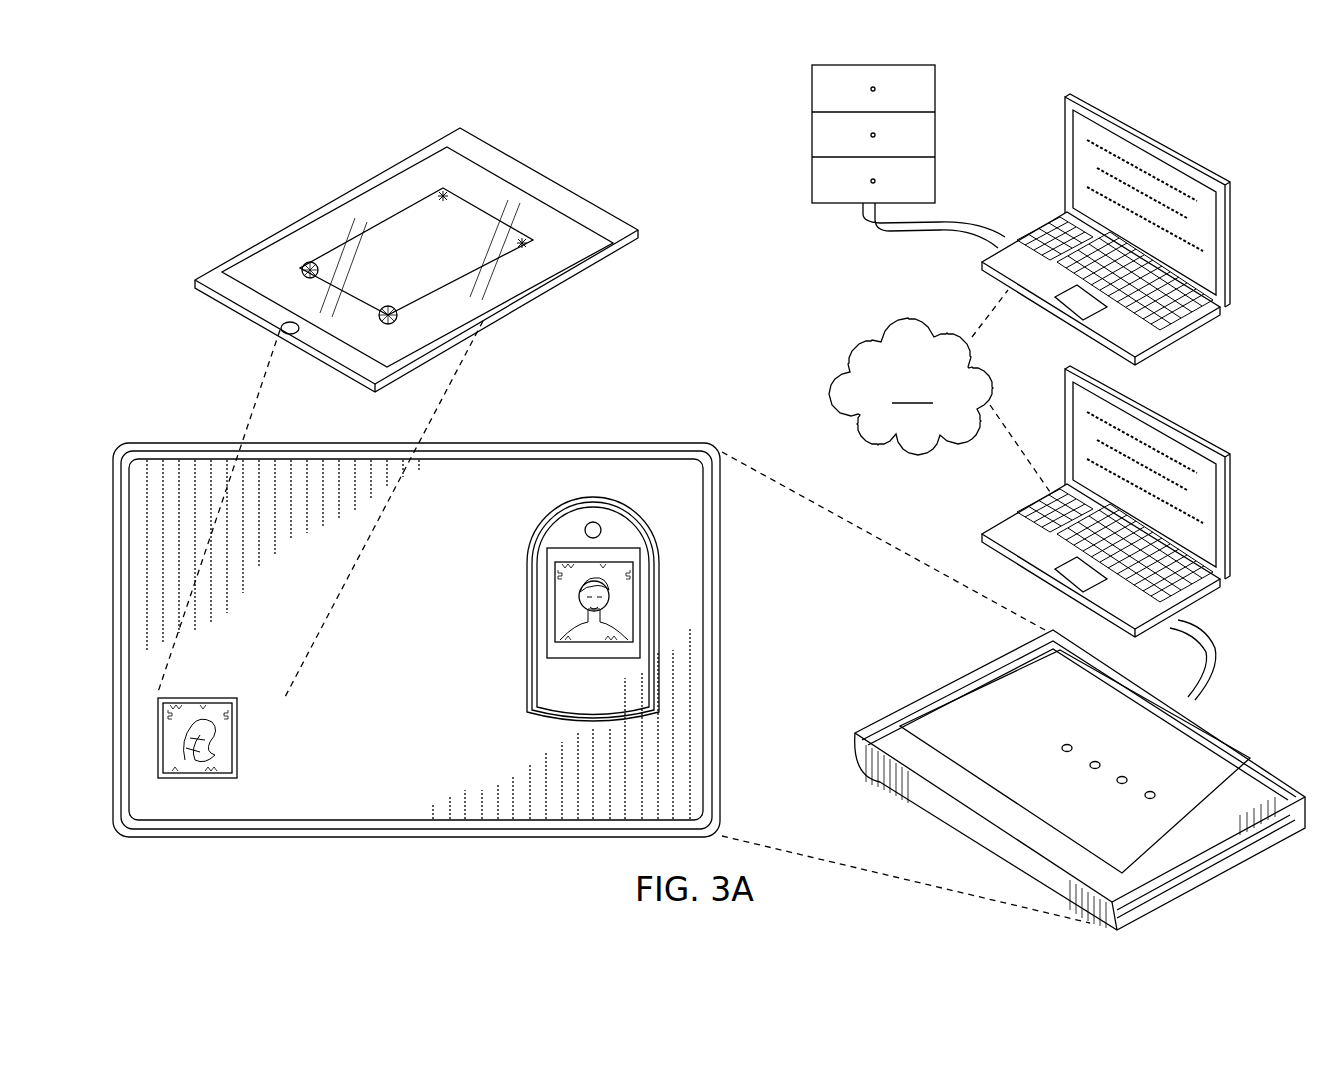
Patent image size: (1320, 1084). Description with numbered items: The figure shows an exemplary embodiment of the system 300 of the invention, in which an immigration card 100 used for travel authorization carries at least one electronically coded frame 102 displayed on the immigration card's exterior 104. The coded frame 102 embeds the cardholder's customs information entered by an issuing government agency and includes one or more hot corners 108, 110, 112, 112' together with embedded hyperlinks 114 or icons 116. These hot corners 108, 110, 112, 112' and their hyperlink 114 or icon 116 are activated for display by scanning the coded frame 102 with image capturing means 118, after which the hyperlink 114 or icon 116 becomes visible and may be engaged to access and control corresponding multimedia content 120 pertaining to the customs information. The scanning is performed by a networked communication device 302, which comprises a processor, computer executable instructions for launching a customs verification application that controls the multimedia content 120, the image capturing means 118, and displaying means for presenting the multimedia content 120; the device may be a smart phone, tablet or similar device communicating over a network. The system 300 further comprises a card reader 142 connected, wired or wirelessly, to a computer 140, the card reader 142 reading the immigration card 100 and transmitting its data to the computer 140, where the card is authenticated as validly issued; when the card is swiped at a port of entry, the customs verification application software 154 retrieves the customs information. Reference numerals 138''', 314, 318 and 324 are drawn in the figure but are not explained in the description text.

The immigration card 100 is at (290, 853).
The electronically coded frame 102 is at (200, 780).
The immigration card exterior 104 is at (398, 742).
The hot corner 108 is at (308, 264).
The hot corner 110 is at (393, 318).
The hot corner 112 is at (136, 833).
The hot corner 112' is at (211, 673).
The hyperlink 114 is at (383, 317).
The icon 116 is at (522, 240).
The image capturing means 118 is at (387, 325).
The multimedia content 120 is at (488, 288).
The reader contact 138''' is at (1215, 859).
The computer 140 is at (1180, 428).
The card reader 142 is at (1225, 772).
The customs verification application software 154 is at (1170, 190).
The system 300 is at (737, 142).
The networked communication device 302 is at (350, 177).
The server computer 314 is at (1140, 135).
The database server 318 is at (937, 118).
The authenticating information display 324 is at (478, 222).